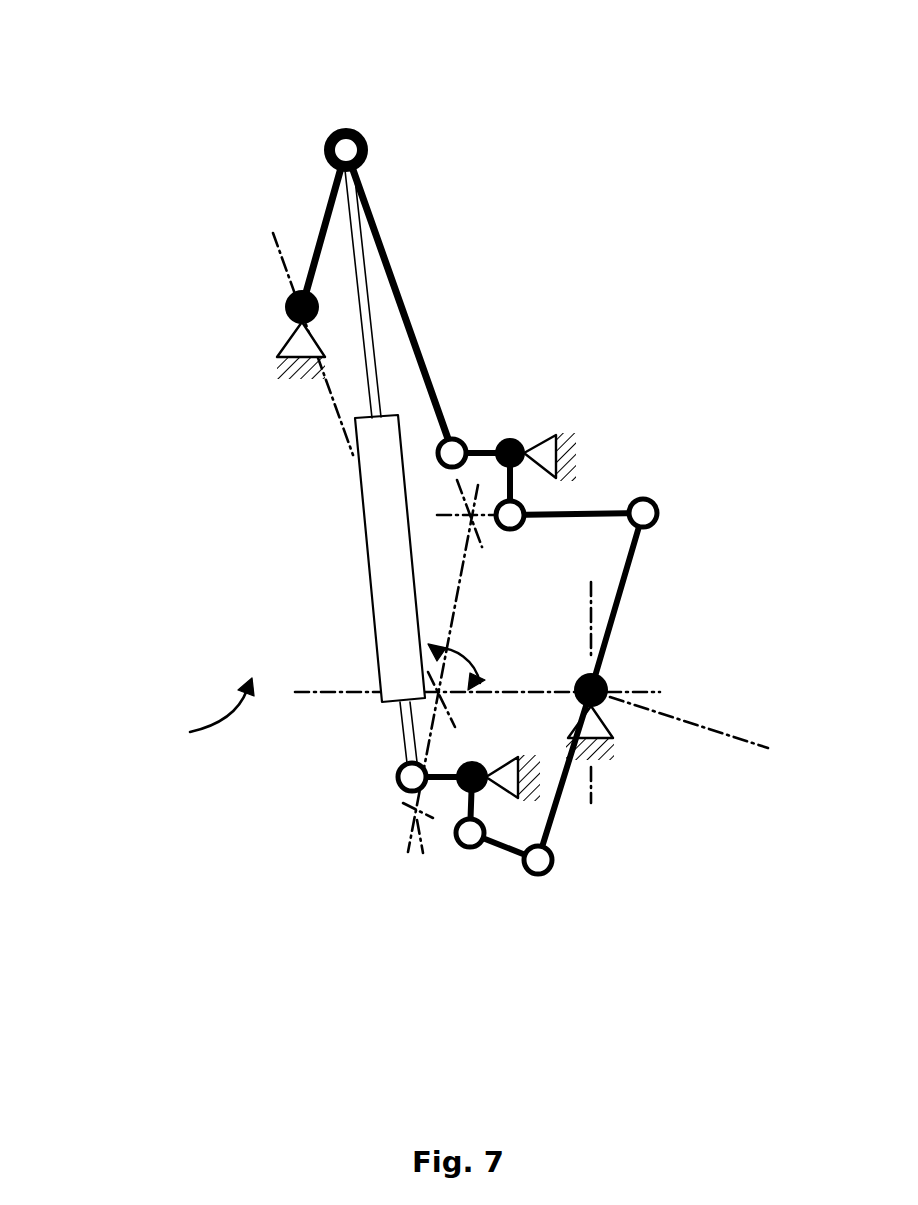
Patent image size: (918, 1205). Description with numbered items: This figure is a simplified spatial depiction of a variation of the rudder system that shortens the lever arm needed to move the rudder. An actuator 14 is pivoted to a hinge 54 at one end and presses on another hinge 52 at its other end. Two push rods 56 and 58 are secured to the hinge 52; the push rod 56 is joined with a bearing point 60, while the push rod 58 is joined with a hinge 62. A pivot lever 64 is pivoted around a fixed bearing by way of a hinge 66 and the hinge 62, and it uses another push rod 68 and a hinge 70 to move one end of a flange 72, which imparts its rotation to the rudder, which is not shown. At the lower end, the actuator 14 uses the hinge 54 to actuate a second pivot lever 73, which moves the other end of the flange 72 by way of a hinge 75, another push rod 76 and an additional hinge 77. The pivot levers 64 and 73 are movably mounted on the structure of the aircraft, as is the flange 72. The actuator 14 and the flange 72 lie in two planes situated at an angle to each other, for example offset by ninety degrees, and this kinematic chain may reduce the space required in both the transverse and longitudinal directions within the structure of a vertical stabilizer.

The actuator 14 is at (362, 530).
The hinge 52 is at (366, 140).
The hinge 54 is at (397, 783).
The push rod 56 is at (320, 227).
The push rod 58 is at (388, 257).
The bearing point 60 is at (285, 308).
The hinge 62 is at (465, 440).
The pivot lever 64 is at (513, 487).
The hinge 66 is at (506, 530).
The push rod 68 is at (582, 520).
The hinge 70 is at (650, 506).
The flange 72 is at (617, 612).
The second pivot lever 73 is at (445, 777).
The hinge 75 is at (460, 850).
The push rod 76 is at (500, 855).
The hinge 77 is at (550, 873).